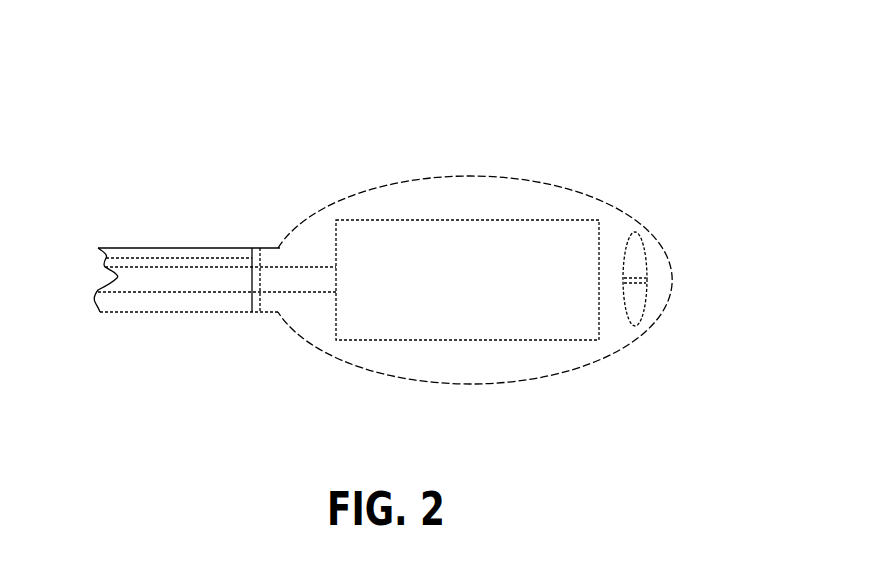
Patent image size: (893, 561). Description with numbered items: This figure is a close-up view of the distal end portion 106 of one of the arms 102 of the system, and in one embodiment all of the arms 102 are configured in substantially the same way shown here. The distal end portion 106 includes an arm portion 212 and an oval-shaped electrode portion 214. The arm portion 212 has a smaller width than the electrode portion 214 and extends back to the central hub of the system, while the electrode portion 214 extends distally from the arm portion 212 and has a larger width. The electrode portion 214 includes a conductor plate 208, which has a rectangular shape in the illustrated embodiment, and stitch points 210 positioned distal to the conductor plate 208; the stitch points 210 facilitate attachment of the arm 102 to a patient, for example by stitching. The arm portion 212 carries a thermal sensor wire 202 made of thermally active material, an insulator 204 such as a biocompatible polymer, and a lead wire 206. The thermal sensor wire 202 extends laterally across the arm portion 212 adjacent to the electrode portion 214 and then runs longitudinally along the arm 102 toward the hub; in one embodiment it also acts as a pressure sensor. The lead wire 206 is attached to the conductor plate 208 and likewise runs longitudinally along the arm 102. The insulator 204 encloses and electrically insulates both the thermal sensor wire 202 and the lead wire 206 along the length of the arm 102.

The arm 102 is at (223, 98).
The distal end portion 106 is at (540, 183).
The thermal sensor wire 202 is at (120, 248).
The insulator 204 is at (103, 313).
The lead wire 206 is at (203, 281).
The conductor plate 208 is at (573, 240).
The stitch points 210 is at (633, 260).
The arm portion 212 is at (203, 247).
The electrode portion 214 is at (599, 360).